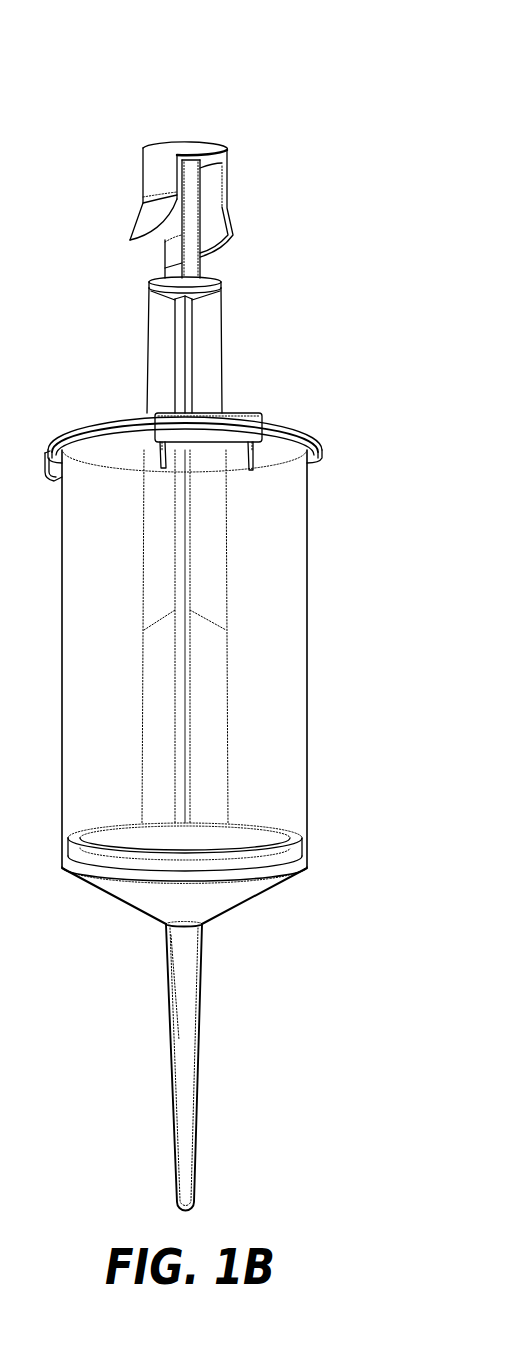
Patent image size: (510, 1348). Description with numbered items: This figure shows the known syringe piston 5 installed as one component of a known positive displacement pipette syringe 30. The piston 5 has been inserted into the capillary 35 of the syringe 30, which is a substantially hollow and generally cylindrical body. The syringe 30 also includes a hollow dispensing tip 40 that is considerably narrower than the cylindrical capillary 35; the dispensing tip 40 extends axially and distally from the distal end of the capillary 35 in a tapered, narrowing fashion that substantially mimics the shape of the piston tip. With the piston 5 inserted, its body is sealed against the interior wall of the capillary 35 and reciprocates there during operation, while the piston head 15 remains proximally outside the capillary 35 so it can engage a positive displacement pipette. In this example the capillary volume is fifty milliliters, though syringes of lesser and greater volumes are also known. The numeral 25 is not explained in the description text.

The positive displacement pipette syringe 30 is at (305, 79).
The piston head 15 is at (193, 141).
The syringe piston 5 is at (250, 292).
The capillary 35 is at (307, 590).
The inner channel 25 is at (172, 1040).
The dispensing tip 40 is at (200, 1084).